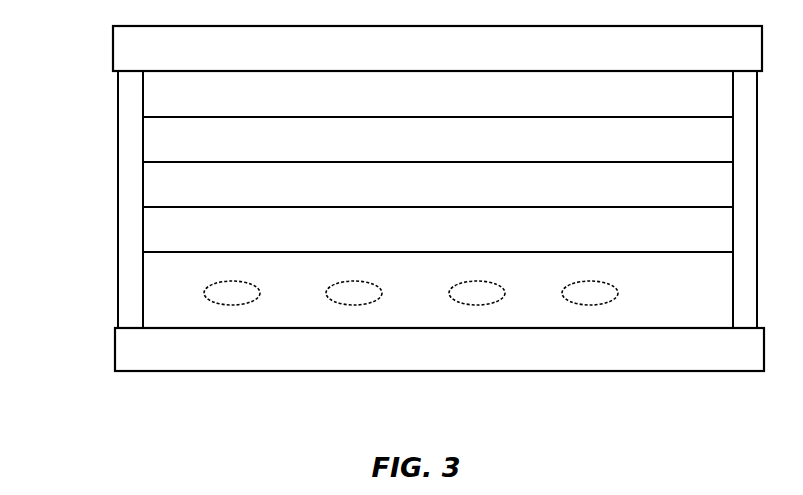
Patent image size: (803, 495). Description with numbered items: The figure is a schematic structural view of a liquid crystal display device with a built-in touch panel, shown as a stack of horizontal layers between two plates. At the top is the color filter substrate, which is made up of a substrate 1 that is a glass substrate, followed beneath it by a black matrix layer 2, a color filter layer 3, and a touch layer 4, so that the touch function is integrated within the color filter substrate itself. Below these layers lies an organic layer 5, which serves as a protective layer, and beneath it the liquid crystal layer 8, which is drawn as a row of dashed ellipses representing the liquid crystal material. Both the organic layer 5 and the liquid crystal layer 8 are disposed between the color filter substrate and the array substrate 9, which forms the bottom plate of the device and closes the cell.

The substrate 1 is at (437, 48).
The black matrix layer 2 is at (438, 97).
The color filter layer 3 is at (438, 141).
The touch layer 4 is at (438, 187).
The organic layer 5 is at (438, 232).
The liquid crystal layer 8 is at (216, 297).
The array substrate 9 is at (439, 349).